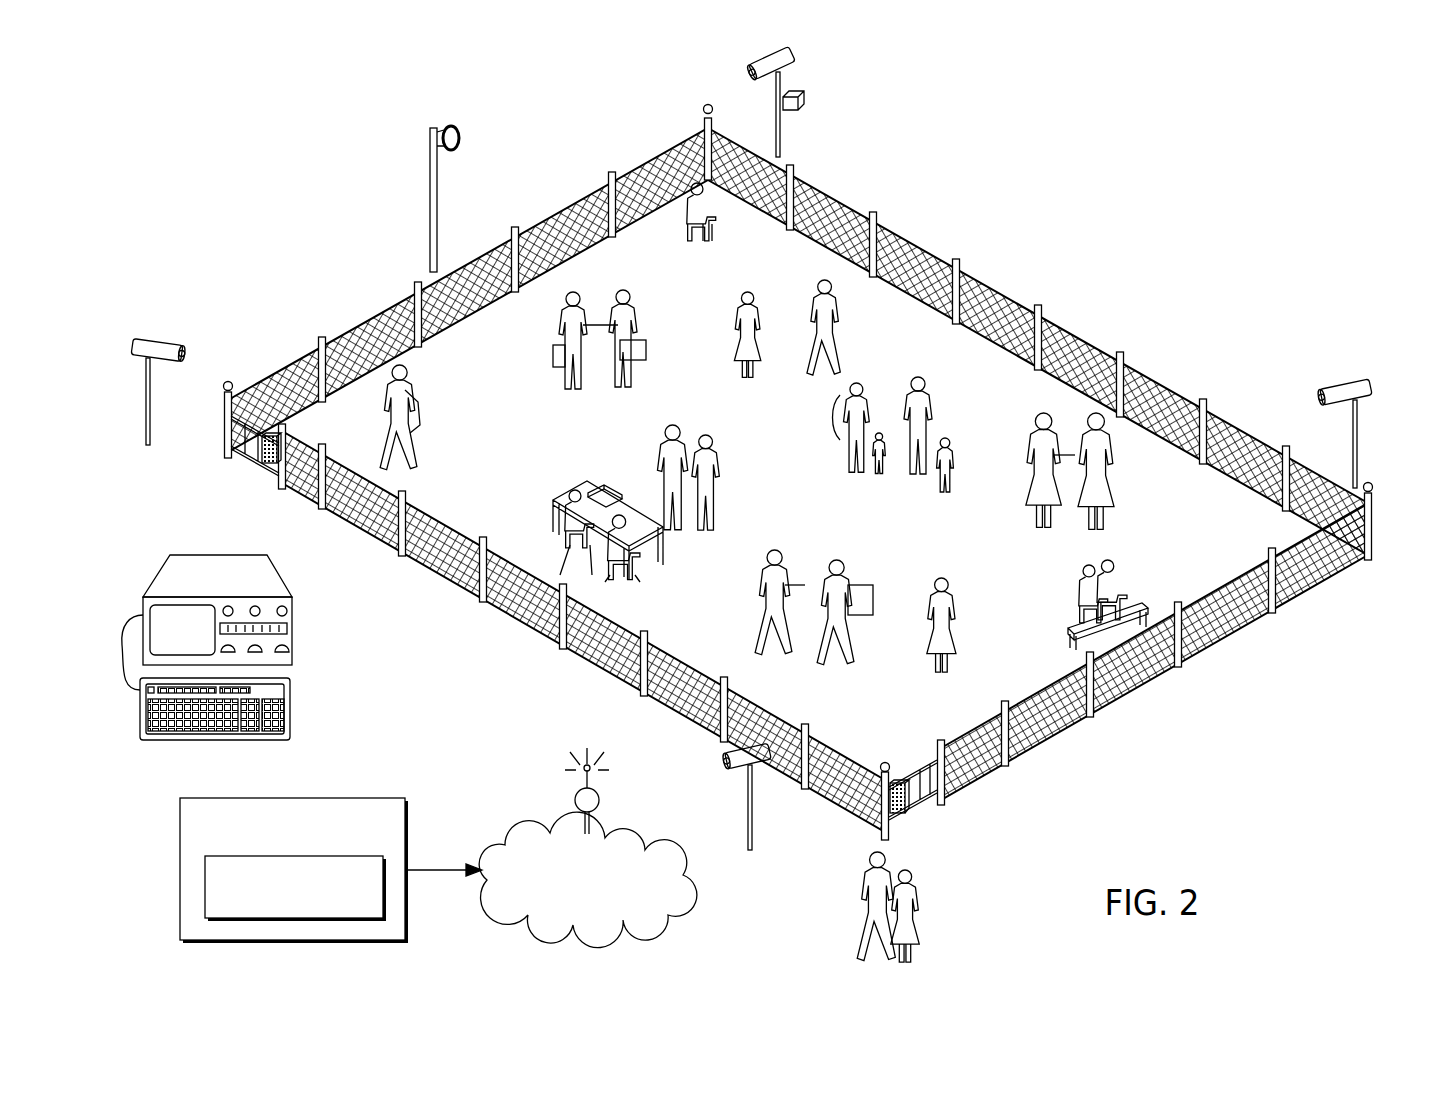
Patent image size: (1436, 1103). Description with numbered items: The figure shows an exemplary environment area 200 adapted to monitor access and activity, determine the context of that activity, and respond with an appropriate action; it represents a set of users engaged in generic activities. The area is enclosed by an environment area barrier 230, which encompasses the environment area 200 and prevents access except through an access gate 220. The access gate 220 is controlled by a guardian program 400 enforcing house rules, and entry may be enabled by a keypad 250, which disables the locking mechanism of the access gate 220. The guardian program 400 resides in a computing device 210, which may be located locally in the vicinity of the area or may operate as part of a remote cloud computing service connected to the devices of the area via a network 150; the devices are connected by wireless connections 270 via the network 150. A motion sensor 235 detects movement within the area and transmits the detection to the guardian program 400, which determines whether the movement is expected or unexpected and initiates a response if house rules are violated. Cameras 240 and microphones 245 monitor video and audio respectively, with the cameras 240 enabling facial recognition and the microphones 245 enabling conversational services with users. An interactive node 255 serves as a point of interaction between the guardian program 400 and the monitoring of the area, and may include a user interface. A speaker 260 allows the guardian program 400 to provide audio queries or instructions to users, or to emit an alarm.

The environment area 200 is at (1113, 197).
The environment area barrier 230 is at (996, 292).
The microphones 245 is at (885, 763).
The access gate 220 is at (280, 488).
The keypad 250 is at (260, 466).
The cameras 240 is at (751, 448).
The motion sensor 235 is at (801, 104).
The speaker 260 is at (431, 148).
The interactive node 255 is at (292, 618).
The computing device 210 is at (200, 797).
The guardian program 400 is at (205, 893).
The network 150 is at (598, 928).
The wireless connections 270 is at (575, 797).